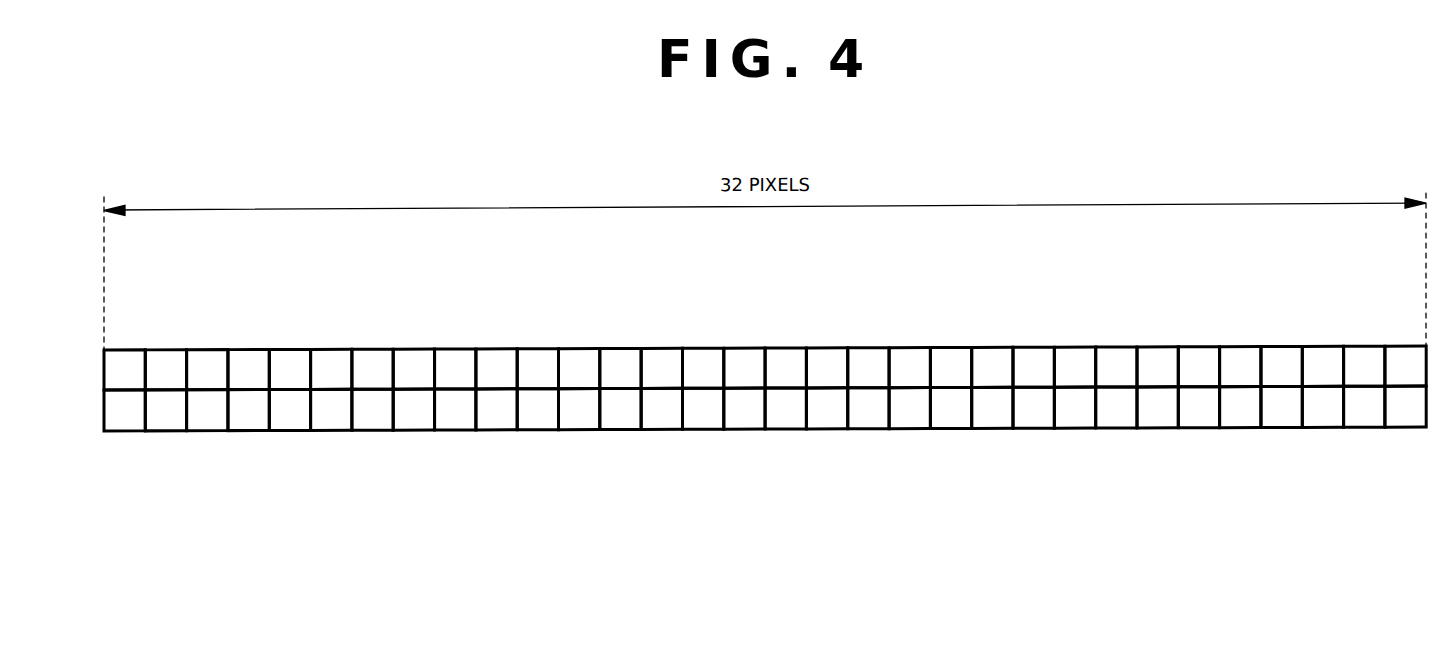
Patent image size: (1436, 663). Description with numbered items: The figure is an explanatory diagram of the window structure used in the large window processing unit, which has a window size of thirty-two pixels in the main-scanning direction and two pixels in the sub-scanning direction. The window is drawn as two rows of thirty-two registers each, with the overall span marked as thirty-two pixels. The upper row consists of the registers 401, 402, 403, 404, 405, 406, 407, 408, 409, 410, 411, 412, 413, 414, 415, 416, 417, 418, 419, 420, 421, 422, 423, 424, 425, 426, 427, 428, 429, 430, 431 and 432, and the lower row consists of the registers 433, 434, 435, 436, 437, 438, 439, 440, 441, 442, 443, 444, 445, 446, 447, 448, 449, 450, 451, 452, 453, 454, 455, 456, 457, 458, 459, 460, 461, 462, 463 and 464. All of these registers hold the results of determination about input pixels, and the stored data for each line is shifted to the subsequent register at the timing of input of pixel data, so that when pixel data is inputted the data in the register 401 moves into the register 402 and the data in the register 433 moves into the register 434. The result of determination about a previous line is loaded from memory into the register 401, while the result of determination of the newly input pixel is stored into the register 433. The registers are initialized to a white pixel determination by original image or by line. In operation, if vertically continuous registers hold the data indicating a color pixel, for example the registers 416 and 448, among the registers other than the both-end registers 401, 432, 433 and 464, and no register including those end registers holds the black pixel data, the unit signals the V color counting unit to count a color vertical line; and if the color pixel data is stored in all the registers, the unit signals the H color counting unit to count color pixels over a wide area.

The register 401 is at (1409, 350).
The register 402 is at (1367, 350).
The register 403 is at (1326, 350).
The register 404 is at (1285, 350).
The register 405 is at (1243, 350).
The register 406 is at (1202, 350).
The register 407 is at (1161, 350).
The register 408 is at (1119, 350).
The register 409 is at (1078, 350).
The register 410 is at (1037, 350).
The register 411 is at (995, 350).
The register 412 is at (954, 350).
The register 413 is at (913, 350).
The register 414 is at (871, 350).
The register 415 is at (830, 350).
The register 416 is at (789, 350).
The register 417 is at (748, 350).
The register 418 is at (706, 350).
The register 419 is at (665, 350).
The register 420 is at (624, 350).
The register 421 is at (582, 350).
The register 422 is at (541, 350).
The register 423 is at (500, 350).
The register 424 is at (458, 350).
The register 425 is at (417, 350).
The register 426 is at (376, 350).
The register 427 is at (334, 350).
The register 428 is at (293, 350).
The register 429 is at (252, 350).
The register 430 is at (210, 350).
The register 431 is at (169, 350).
The register 432 is at (128, 350).
The register 433 is at (1408, 431).
The register 434 is at (1366, 431).
The register 435 is at (1325, 431).
The register 436 is at (1284, 431).
The register 437 is at (1242, 431).
The register 438 is at (1201, 431).
The register 439 is at (1160, 431).
The register 440 is at (1118, 431).
The register 441 is at (1077, 431).
The register 442 is at (1036, 431).
The register 443 is at (994, 431).
The register 444 is at (953, 431).
The register 445 is at (912, 431).
The register 446 is at (870, 431).
The register 447 is at (829, 431).
The register 448 is at (788, 431).
The register 449 is at (746, 431).
The register 450 is at (705, 431).
The register 451 is at (664, 431).
The register 452 is at (622, 431).
The register 453 is at (581, 431).
The register 454 is at (540, 431).
The register 455 is at (498, 431).
The register 456 is at (457, 431).
The register 457 is at (416, 431).
The register 458 is at (375, 431).
The register 459 is at (333, 431).
The register 460 is at (292, 431).
The register 461 is at (251, 431).
The register 462 is at (209, 431).
The register 463 is at (168, 431).
The register 464 is at (127, 431).